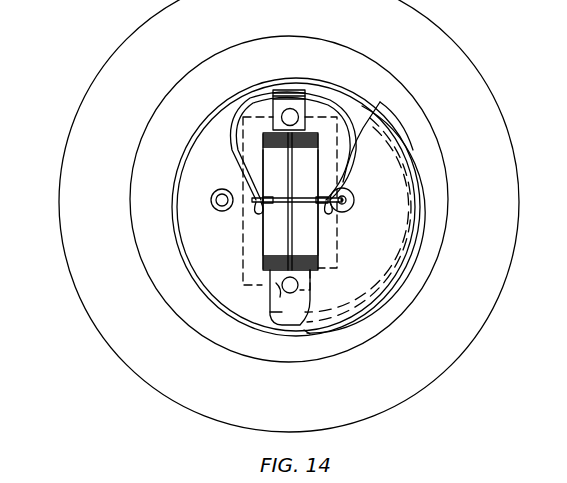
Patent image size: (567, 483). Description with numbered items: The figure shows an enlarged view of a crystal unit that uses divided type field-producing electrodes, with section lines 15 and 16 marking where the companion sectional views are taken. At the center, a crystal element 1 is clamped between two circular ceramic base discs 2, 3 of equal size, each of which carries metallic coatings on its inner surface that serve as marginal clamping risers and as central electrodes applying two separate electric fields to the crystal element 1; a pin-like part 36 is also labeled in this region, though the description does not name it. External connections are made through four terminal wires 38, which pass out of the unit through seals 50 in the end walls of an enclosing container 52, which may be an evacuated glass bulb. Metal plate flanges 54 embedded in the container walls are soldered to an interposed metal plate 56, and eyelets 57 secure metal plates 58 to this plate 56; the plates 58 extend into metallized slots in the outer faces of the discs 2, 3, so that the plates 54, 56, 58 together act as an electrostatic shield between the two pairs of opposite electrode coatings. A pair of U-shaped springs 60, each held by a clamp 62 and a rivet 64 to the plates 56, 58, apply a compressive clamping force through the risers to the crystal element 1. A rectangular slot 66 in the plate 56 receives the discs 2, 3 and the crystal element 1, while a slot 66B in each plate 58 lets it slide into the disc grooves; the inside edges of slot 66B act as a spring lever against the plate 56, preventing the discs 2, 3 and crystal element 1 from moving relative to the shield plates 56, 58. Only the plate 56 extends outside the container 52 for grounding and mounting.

The crystal element 1 is at (290, 170).
The ceramic base disc 2 is at (268, 232).
The ceramic base disc 3 is at (313, 230).
The section line 15— 15 is at (62, 201).
The section line 16— 16 is at (57, 422).
The pivot pin 36 is at (287, 202).
The terminal wires 38 is at (283, 198).
The seals 50 is at (351, 209).
The enclosing container 52 is at (398, 260).
The metal plate flanges 54 is at (446, 218).
The metal plate 56 is at (145, 23).
The eyelets 57 is at (217, 206).
The metal plates 58 is at (248, 292).
The U-shaped springs 60 is at (238, 152).
The clamp 62 is at (275, 92).
The rivet 64 is at (291, 118).
The rectangular slot 66 is at (243, 269).
The slot 66B is at (318, 228).